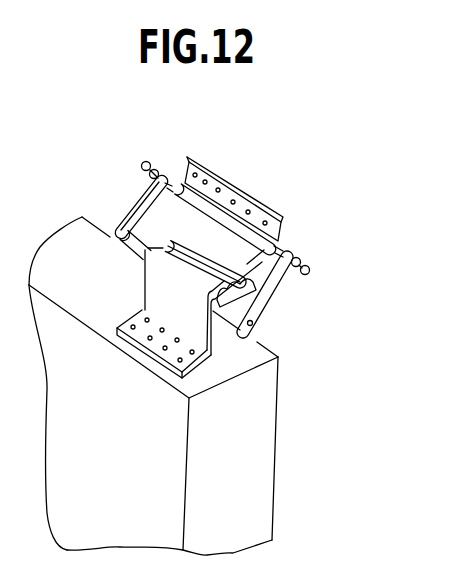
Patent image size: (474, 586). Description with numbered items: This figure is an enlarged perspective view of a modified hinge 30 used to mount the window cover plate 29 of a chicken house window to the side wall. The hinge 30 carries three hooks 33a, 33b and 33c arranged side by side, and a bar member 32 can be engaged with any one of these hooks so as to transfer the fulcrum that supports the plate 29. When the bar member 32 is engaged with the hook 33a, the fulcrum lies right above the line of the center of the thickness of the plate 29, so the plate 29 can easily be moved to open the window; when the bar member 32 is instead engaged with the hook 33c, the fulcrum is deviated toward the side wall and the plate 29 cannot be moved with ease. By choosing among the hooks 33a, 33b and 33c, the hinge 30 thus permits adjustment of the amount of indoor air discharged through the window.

The plate 29 is at (122, 475).
The hinge 30 is at (273, 311).
The bar member 32 is at (135, 238).
The hook 33a is at (150, 247).
The hook 33b is at (168, 245).
The hook 33c is at (182, 243).